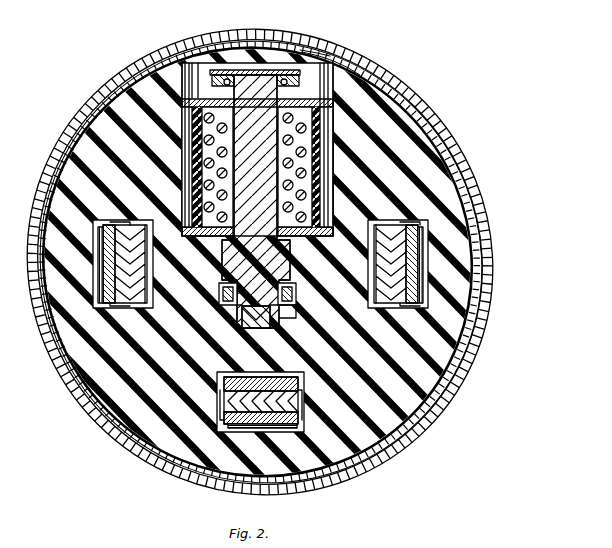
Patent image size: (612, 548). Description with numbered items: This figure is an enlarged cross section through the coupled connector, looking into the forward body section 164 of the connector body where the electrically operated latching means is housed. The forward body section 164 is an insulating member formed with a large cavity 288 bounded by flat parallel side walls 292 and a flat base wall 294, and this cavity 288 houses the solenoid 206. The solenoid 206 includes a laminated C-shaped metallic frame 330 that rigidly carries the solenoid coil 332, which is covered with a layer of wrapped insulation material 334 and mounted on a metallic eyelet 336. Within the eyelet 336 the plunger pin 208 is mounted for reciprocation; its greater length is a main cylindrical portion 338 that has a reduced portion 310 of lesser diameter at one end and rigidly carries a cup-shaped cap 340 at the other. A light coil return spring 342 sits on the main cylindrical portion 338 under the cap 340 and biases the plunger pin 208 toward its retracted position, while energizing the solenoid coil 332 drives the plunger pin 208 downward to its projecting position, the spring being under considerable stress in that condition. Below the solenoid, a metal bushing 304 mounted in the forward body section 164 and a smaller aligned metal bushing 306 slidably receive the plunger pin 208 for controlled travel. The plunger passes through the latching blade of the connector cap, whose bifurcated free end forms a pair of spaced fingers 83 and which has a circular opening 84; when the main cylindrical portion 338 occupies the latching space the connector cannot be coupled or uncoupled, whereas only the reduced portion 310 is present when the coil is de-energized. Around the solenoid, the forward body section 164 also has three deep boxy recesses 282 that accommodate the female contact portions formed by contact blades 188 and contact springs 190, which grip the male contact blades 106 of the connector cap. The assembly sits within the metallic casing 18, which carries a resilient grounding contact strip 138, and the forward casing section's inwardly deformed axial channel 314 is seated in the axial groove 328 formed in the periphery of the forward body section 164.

The metallic casing 18 is at (125, 72).
The forward body section 164 is at (76, 188).
The cup-shaped cap 340 is at (320, 47).
The coil return spring 342 is at (315, 96).
The metallic eyelet 336 is at (255, 70).
The main cylindrical portion 338 is at (255, 64).
The laminated C-shaped metallic frame 330 is at (312, 107).
The cavity 288 is at (190, 163).
The side walls 292 is at (186, 207).
The contact blade 106 is at (123, 228).
The contact spring 190 is at (101, 258).
The boxy recesses 282 is at (106, 306).
The contact blade 188 is at (153, 304).
The reduced portion 310 is at (237, 322).
The spaced fingers 83 is at (221, 295).
The circular opening 84 is at (262, 320).
The metal bushing 304 is at (284, 258).
The base wall 294 is at (312, 236).
The plunger pin 208 is at (296, 277).
The metal bushing 306 is at (297, 318).
The wrapped insulation material 334 is at (322, 143).
The solenoid 206 is at (333, 166).
The solenoid coil 332 is at (321, 188).
The axial groove 328 is at (94, 388).
The grounding contact strip 138 is at (96, 412).
The axial channel 314 is at (121, 440).